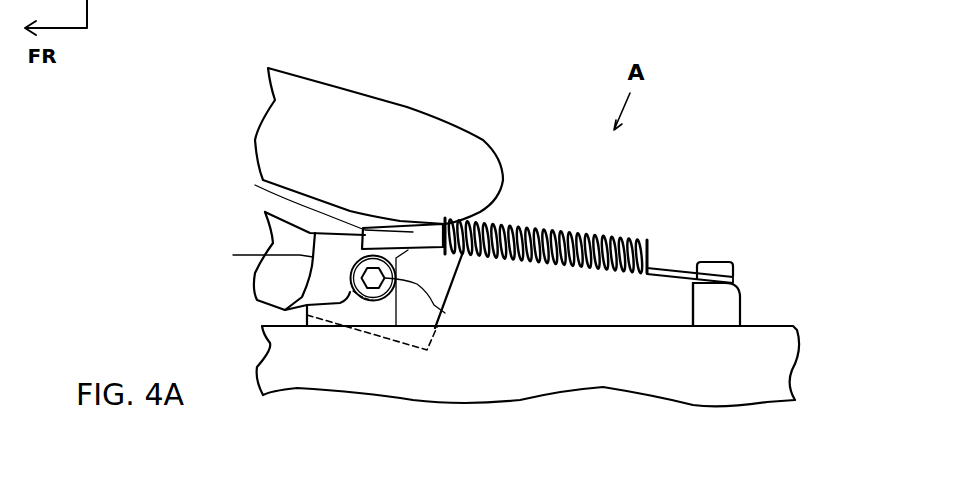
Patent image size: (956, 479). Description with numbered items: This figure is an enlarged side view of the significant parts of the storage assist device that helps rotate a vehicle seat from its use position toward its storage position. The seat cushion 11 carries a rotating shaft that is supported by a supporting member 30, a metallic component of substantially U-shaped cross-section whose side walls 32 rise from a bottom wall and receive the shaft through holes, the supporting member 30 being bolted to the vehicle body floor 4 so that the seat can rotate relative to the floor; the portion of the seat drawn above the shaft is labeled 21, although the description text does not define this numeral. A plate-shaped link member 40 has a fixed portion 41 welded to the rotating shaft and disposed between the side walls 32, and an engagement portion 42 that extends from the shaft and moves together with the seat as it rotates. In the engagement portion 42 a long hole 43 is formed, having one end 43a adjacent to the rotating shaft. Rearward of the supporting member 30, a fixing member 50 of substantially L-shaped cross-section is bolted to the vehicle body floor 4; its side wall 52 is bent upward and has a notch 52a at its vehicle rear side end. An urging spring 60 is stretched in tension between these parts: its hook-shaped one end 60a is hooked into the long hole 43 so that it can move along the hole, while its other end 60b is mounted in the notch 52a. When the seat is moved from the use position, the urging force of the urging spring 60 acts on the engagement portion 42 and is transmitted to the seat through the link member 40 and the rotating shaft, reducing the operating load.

The vehicle body floor 4 is at (265, 326).
The seat cushion 11 is at (262, 238).
The seat body 21 is at (325, 93).
The supporting member 30 is at (390, 305).
The side wall 32 is at (342, 313).
The link member 40 is at (360, 238).
The fixed portion 41 is at (447, 315).
The engagement portion 42 is at (405, 225).
The long hole 43 is at (263, 187).
The one end of the long hole 43a is at (233, 255).
The fixing member 50 is at (743, 302).
The side wall 52 is at (707, 313).
The notch 52a is at (737, 273).
The urging spring 60 is at (578, 224).
The one end of the urging spring 60a is at (428, 255).
The other end of the urging spring 60b is at (678, 270).